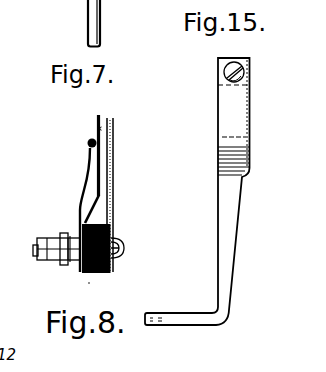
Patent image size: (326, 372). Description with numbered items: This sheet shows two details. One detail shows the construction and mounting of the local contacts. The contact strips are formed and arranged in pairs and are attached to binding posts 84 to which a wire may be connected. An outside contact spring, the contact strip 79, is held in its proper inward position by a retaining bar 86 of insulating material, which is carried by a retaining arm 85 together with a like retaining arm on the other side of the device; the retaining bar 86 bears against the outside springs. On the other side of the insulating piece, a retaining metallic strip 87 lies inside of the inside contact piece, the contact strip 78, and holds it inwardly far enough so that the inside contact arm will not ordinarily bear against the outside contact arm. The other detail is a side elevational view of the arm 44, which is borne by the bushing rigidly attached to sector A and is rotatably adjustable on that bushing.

In FIG. 8, the contact strip 79 is at (97, 118).
In FIG. 8, the contact strip 78 is at (113, 143).
In FIG. 8, the retaining metallic strip 87 is at (112, 200).
In FIG. 8, the retaining bar 86 is at (88, 141).
In FIG. 8, the retaining arm 85 is at (88, 153).
In FIG. 8, the binding post 84 is at (45, 257).
In FIG. 15, the arm 44 is at (224, 253).